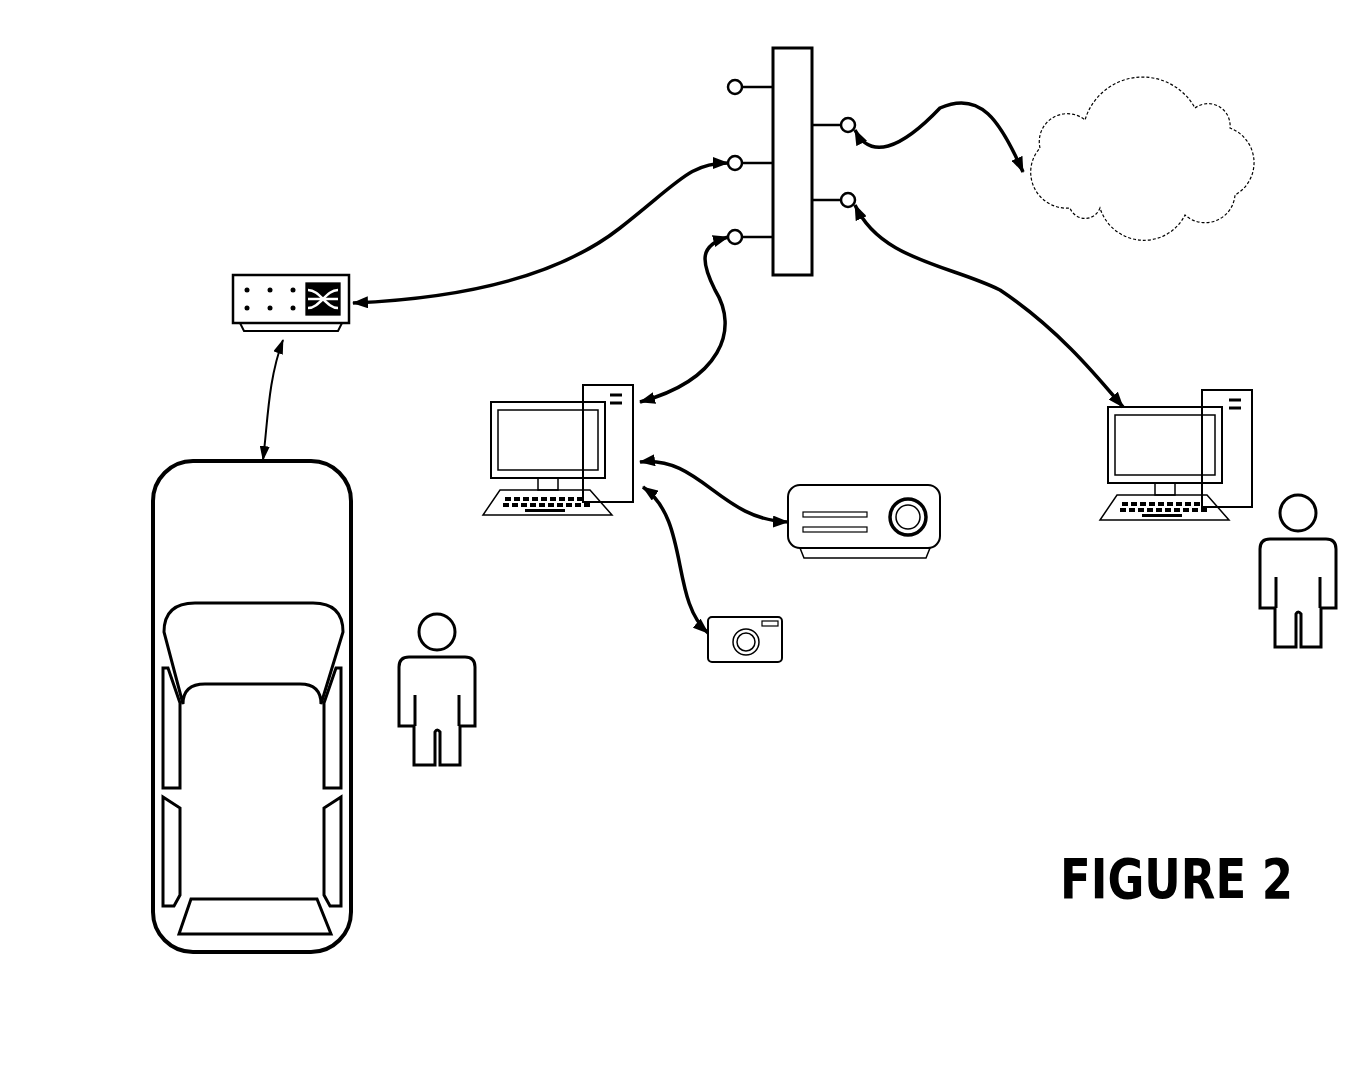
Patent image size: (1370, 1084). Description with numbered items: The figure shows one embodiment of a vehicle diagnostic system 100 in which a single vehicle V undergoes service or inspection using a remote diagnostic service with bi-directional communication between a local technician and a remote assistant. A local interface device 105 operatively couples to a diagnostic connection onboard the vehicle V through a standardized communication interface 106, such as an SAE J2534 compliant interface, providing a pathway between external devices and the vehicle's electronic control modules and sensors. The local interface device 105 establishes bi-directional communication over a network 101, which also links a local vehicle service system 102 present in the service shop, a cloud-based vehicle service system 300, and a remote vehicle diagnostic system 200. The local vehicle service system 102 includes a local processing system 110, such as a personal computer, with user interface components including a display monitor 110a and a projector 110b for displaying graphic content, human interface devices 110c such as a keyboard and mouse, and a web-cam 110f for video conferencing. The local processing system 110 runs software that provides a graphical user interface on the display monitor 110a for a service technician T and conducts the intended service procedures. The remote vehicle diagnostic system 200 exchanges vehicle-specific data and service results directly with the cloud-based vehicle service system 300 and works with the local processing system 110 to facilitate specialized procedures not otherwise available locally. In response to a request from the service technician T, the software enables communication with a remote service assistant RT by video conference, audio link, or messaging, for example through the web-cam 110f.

The vehicle diagnostic system 100 is at (238, 104).
The network 101 is at (697, 123).
The local vehicle service system 102 is at (586, 456).
The local interface device 105 is at (288, 262).
The standardized communication interface 106 is at (285, 420).
The local processing system 110 is at (620, 440).
The display monitor 110a is at (520, 445).
The projector 110b is at (883, 482).
The human interface devices 110c is at (567, 522).
The web-cam 110f is at (755, 663).
The remote vehicle diagnostic system 200 is at (1178, 382).
The cloud-based vehicle service system 300 is at (1200, 152).
The service technician T is at (482, 712).
The remote service assistant RT is at (1306, 660).
The vehicle V is at (262, 797).